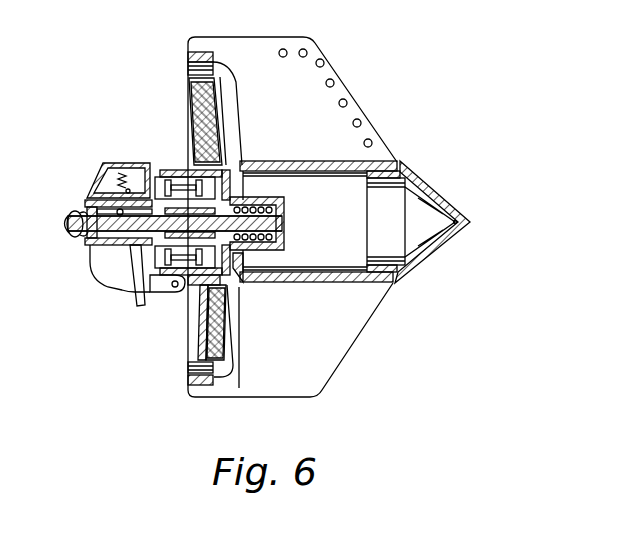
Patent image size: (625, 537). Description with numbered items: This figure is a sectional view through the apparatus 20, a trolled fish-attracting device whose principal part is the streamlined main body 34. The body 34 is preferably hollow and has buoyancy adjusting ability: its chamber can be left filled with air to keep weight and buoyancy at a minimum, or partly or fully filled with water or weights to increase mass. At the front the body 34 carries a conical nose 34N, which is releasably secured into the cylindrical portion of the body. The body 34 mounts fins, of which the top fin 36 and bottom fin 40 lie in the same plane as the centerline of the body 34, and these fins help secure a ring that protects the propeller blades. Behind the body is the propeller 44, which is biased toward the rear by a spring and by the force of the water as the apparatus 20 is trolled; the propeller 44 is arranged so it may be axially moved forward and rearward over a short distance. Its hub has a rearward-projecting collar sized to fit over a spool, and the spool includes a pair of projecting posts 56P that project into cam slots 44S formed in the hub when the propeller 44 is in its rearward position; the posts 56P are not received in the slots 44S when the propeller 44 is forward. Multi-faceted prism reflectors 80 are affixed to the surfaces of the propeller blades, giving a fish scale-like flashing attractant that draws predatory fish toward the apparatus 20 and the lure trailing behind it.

The apparatus 20 is at (428, 263).
The main body 34 is at (343, 160).
The conical nose 34N is at (430, 187).
The top fin 36 is at (343, 75).
The bottom fin 40 is at (337, 338).
The propeller 44 is at (230, 347).
The cam slots 44S is at (258, 164).
The projecting posts 56P is at (200, 143).
The multi-faceted prism reflectors 80 is at (197, 108).